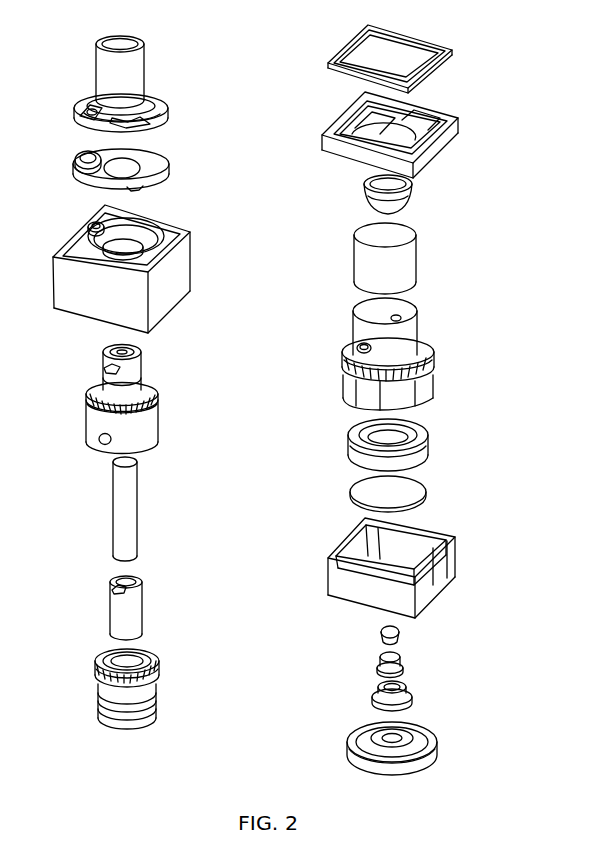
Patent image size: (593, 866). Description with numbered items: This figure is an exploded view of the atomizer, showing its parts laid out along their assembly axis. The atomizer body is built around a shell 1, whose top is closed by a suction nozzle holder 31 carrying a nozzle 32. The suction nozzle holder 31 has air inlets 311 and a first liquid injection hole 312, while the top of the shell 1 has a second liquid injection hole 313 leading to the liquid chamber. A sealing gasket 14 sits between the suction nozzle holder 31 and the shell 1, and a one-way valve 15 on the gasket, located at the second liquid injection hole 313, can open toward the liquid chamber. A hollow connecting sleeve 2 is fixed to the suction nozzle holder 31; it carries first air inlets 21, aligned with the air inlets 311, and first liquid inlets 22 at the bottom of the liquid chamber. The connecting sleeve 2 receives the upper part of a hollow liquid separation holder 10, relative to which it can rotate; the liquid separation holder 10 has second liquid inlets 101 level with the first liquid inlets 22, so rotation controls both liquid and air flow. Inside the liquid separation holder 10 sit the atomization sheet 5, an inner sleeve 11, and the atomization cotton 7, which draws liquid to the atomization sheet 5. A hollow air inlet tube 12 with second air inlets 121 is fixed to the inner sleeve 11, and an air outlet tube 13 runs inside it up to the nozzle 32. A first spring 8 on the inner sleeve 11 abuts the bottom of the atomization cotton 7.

The shell 1 is at (191, 262).
The connecting sleeve 2 is at (158, 398).
The atomization sheet 5 is at (427, 498).
The atomization cotton 7 is at (417, 255).
The first spring 8 is at (417, 200).
The liquid separation holder 10 is at (434, 370).
The second liquid inlets 101 is at (357, 346).
The inner sleeve 11 is at (157, 683).
The air inlet tube 12 is at (142, 608).
The second air inlets 121 is at (112, 589).
The air outlet tube 13 is at (137, 508).
The sealing gasket 14 is at (169, 172).
The one-way valve 15 is at (77, 153).
The first air inlets 21 is at (102, 369).
The first liquid inlets 22 is at (99, 438).
The suction nozzle holder 31 is at (168, 108).
The air inlets 311 is at (145, 126).
The first liquid injection hole 312 is at (86, 114).
The second liquid injection hole 313 is at (88, 227).
The nozzle 32 is at (138, 77).